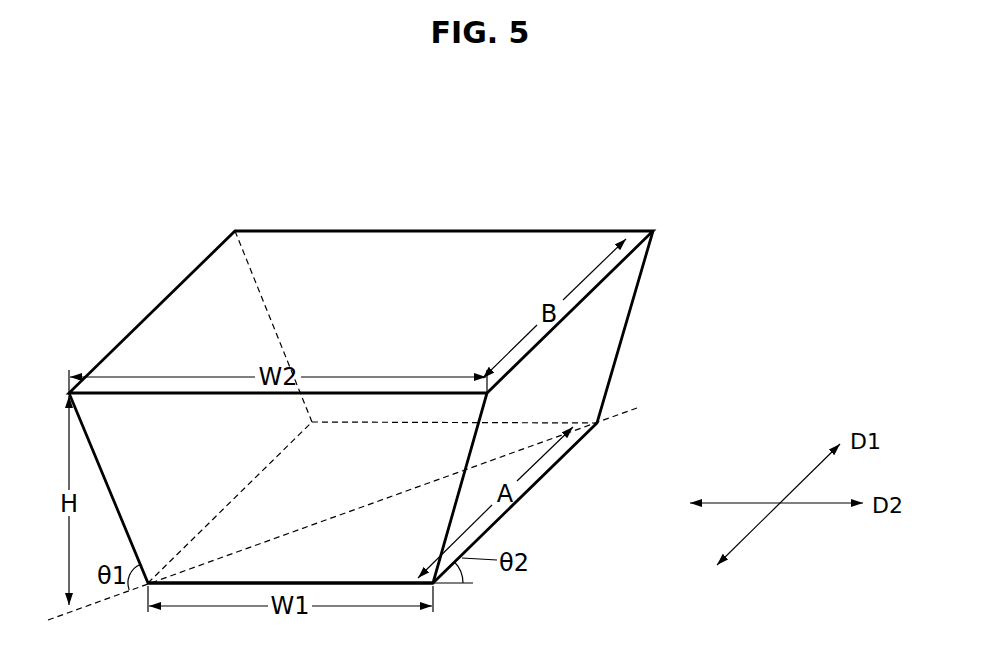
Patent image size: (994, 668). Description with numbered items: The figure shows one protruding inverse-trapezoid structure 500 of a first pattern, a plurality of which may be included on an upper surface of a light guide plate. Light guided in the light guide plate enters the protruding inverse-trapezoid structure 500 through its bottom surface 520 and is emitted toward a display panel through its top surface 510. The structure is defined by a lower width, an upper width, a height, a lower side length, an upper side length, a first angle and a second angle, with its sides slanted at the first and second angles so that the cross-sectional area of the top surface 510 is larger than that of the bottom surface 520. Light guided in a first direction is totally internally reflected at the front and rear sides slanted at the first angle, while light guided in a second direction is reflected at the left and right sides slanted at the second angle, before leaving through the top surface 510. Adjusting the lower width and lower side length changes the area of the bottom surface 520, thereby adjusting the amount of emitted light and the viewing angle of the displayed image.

The protruding inverse-trapezoid structure 500 is at (371, 130).
The top surface 510 is at (428, 255).
The bottom surface 520 is at (308, 492).